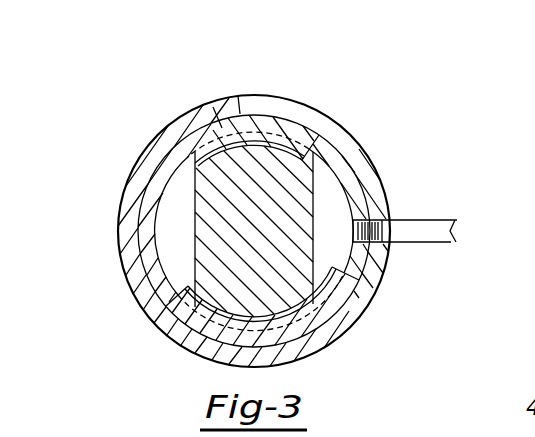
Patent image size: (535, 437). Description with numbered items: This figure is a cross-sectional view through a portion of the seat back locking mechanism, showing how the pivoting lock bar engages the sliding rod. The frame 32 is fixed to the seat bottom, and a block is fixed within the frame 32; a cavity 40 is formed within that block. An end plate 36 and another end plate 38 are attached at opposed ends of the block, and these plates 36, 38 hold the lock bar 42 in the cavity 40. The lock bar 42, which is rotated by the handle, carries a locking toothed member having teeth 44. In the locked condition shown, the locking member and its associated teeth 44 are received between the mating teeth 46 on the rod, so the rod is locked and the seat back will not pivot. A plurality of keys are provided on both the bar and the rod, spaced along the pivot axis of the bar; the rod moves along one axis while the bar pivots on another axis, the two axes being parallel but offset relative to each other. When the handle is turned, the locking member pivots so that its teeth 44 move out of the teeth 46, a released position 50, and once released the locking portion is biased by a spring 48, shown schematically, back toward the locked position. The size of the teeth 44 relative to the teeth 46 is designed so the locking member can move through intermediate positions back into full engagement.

The frame 32 is at (293, 207).
The end plate 36 is at (132, 265).
The end plate 38 is at (145, 222).
The cavity 40 is at (426, 230).
The lock bar 42 is at (297, 147).
The teeth 44 is at (190, 207).
The mating teeth 46 is at (333, 283).
The spring 48 is at (197, 165).
The released position 50 is at (248, 105).